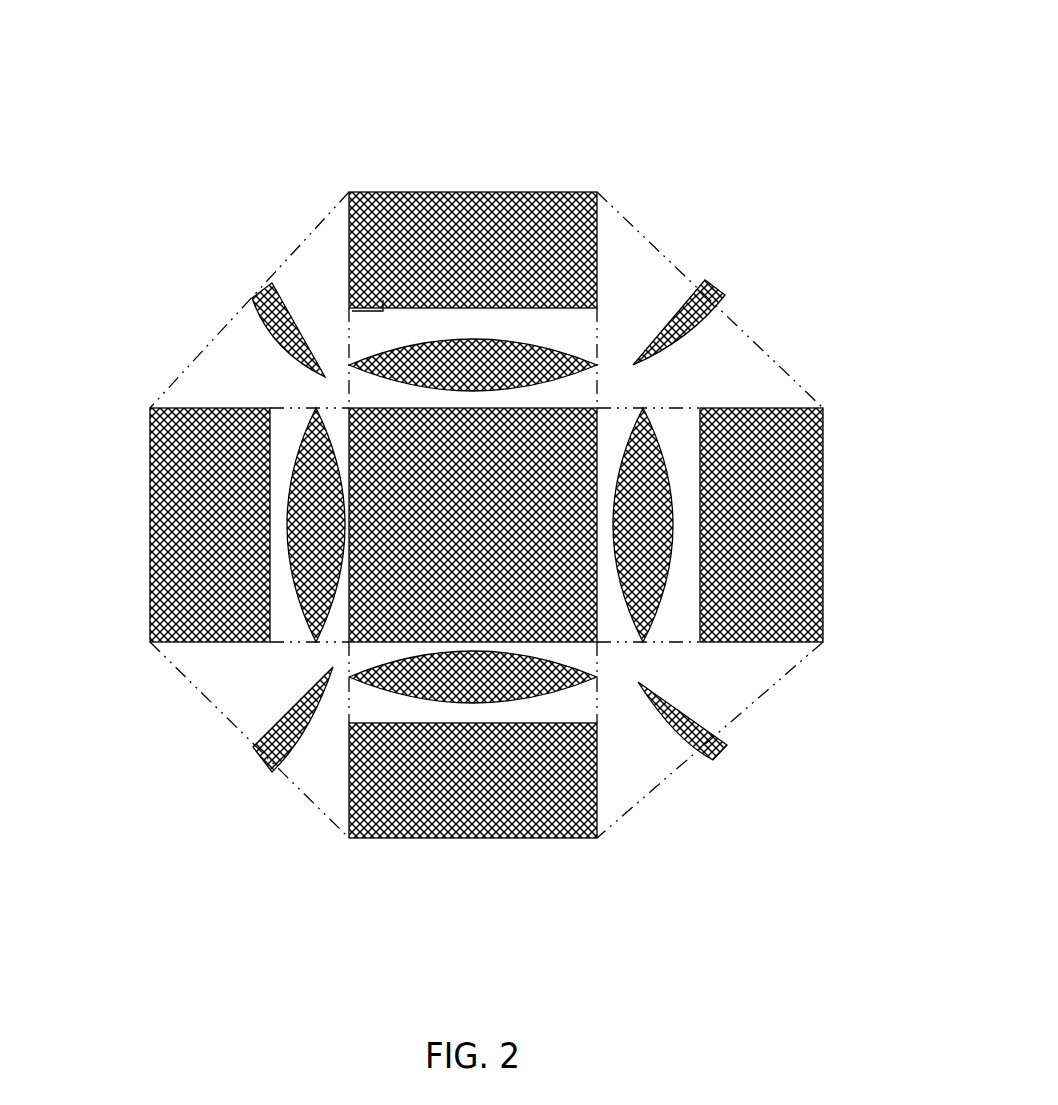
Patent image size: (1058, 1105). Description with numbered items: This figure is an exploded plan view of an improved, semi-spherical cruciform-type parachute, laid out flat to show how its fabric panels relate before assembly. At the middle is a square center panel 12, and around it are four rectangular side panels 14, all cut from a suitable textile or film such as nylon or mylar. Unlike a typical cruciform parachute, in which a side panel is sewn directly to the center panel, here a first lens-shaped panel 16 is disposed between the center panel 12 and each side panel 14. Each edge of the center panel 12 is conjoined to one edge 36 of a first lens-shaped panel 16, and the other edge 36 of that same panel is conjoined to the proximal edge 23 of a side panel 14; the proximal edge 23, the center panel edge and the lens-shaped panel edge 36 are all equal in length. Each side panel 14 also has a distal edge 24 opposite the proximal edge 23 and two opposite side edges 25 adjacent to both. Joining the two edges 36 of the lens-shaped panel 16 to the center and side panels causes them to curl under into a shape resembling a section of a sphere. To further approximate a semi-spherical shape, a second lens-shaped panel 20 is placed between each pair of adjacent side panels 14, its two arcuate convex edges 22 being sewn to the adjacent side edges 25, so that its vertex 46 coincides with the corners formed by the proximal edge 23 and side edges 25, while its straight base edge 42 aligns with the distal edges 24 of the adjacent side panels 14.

The center panel 12 is at (509, 540).
The side panel 14 is at (210, 483).
The first lens-shaped panel 16 is at (457, 678).
The second lens-shaped panel 20 is at (722, 299).
The convex edge 22 is at (686, 335).
The proximal edge 23 is at (383, 311).
The distal edge 24 is at (490, 192).
The side edge 25 is at (173, 408).
The edge of first lens-shaped panel 36 is at (303, 447).
The first base edge 42 is at (705, 282).
The vertex 46 is at (640, 680).